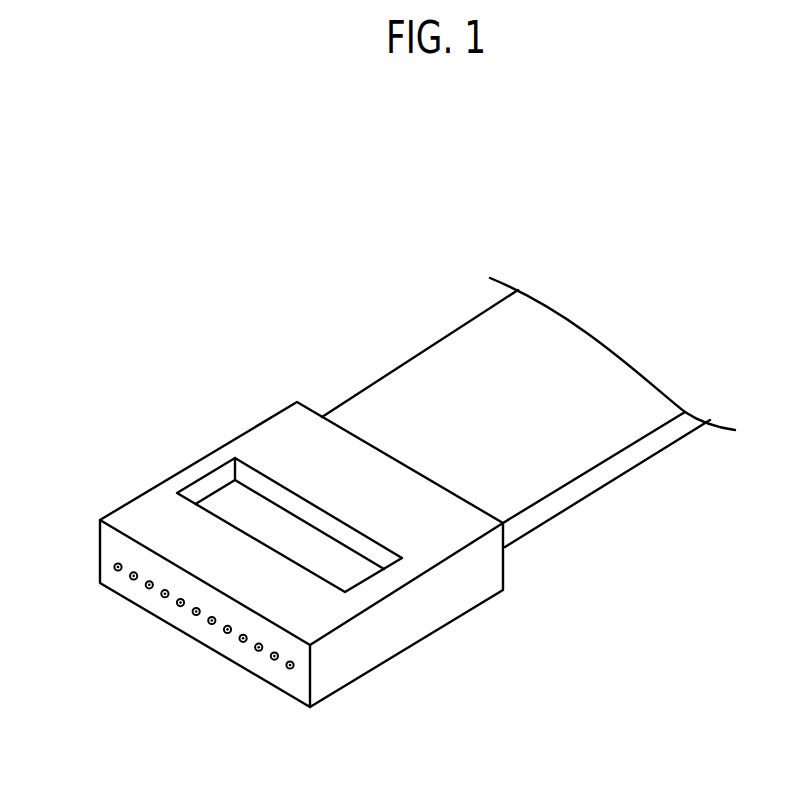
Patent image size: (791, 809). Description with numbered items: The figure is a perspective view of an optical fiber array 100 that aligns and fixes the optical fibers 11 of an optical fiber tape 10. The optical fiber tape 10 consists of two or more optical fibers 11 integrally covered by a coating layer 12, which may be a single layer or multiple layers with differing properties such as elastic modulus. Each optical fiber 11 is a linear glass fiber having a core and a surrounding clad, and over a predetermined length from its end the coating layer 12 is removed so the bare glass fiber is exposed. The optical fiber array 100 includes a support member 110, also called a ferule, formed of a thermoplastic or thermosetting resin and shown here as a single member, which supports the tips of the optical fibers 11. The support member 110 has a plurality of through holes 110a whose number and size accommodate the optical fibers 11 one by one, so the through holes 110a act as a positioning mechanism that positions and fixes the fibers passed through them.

The optical fiber array 100 is at (113, 355).
The optical fiber tape 10 is at (233, 292).
The optical fibers 11 is at (119, 566).
The coating layer 12 is at (354, 405).
The support member 110 is at (413, 627).
The through holes 110a is at (273, 661).